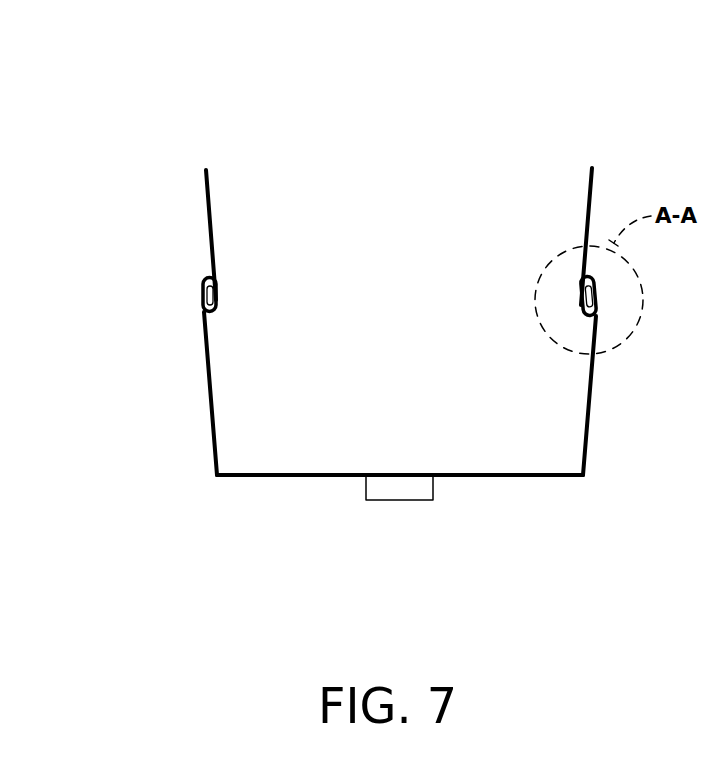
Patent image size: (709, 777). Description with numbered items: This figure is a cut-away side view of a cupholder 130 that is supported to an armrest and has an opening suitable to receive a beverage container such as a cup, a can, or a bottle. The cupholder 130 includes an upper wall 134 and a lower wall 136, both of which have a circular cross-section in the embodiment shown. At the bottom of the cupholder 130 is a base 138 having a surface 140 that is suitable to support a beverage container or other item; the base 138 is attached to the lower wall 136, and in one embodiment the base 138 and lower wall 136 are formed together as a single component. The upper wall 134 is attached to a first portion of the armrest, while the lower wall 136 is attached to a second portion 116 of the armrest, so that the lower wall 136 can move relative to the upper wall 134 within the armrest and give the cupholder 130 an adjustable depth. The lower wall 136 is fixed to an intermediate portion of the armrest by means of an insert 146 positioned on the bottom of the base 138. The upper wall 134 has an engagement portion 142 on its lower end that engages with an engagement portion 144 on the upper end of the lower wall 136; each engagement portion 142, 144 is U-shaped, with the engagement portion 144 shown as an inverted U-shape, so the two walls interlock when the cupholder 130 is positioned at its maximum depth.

The cupholder 130 is at (420, 132).
The upper wall 134 is at (213, 188).
The lower wall 136 is at (208, 407).
The base 138 is at (515, 475).
The surface 140 is at (342, 475).
The engagement portion 142 is at (220, 298).
The engagement portion 144 is at (201, 293).
The second portion 116 is at (293, 477).
The insert 146 is at (433, 498).